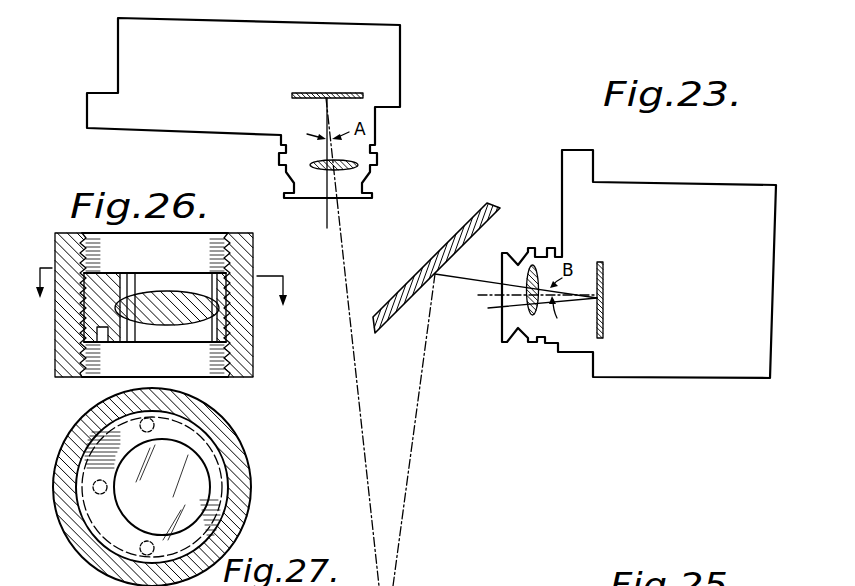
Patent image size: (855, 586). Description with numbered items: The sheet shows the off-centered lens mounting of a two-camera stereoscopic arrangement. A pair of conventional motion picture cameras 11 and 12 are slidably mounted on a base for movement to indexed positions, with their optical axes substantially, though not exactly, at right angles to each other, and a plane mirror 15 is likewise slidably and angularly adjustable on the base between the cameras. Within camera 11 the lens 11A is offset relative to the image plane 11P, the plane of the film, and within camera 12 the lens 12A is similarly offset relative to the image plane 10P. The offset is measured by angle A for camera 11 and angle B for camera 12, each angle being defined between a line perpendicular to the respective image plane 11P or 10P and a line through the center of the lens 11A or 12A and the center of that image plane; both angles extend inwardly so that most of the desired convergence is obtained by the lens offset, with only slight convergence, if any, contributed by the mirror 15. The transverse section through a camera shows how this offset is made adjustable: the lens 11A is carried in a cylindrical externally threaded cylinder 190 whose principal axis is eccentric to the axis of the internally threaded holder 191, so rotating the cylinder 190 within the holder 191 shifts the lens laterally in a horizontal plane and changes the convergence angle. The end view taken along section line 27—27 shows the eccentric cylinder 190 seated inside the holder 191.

In FIG. 23, the motion picture camera 11 is at (386, 57).
In FIG. 23, the image plane 11P is at (302, 93).
In FIG. 23, the lens 11A is at (318, 169).
In FIG. 26, the lens 11A is at (163, 316).
In FIG. 23, the plane mirror 15 is at (455, 230).
In FIG. 23, the motion picture camera 12 is at (705, 187).
In FIG. 23, the lens 12A is at (497, 294).
In FIG. 23, the image plane 10P is at (603, 317).
In FIG. 26, the externally threaded cylinder 190 is at (110, 278).
In FIG. 27, the externally threaded cylinder 190 is at (207, 452).
In FIG. 26, the internally threaded holder 191 is at (70, 373).
In FIG. 27, the internally threaded holder 191 is at (240, 474).
In FIG. 26, the section line 27— 27 is at (165, 300).